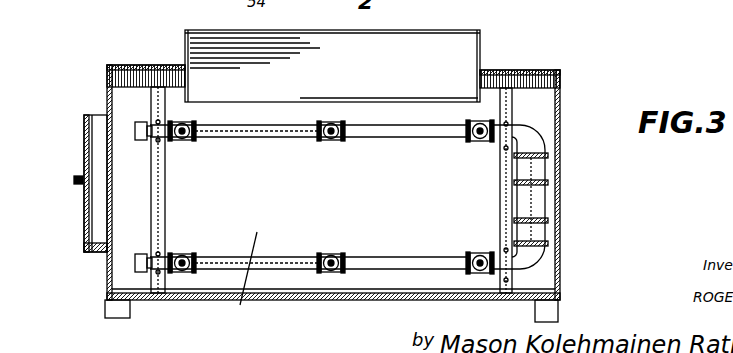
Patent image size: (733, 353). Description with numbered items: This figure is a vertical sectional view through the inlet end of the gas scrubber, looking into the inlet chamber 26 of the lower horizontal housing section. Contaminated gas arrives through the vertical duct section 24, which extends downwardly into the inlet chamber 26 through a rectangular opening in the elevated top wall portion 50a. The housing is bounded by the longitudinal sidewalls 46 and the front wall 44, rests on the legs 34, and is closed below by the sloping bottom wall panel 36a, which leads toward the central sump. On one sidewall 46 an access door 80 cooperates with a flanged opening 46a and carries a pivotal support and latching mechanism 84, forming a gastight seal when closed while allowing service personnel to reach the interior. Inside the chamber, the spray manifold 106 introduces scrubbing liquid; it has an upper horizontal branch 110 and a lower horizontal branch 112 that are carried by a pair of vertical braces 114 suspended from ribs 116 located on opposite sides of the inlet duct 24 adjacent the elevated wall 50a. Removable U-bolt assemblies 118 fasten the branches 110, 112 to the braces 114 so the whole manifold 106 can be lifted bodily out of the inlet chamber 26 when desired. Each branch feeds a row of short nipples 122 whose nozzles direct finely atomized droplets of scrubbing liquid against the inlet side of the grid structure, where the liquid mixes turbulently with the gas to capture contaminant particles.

The vertical duct section 24 is at (482, 45).
The inlet chamber 26 is at (347, 209).
The legs 34 is at (117, 308).
The bottom wall panel 36a is at (303, 333).
The front wall 44 is at (240, 305).
The longitudinal sidewalls 46 is at (107, 272).
The flanged opening 46a is at (100, 117).
The elevated top wall portion 50a is at (597, 50).
The access door 80 is at (84, 146).
The pivotal support and latching mechanism 84 is at (78, 180).
The spray manifold 106 is at (546, 195).
The upper horizontal branch 110 is at (302, 135).
The lower horizontal branch 112 is at (385, 258).
The vertical braces 114 is at (150, 100).
The ribs 116 is at (107, 78).
The U-bolt assemblies 118 is at (160, 140).
The short nipples 122 is at (183, 140).